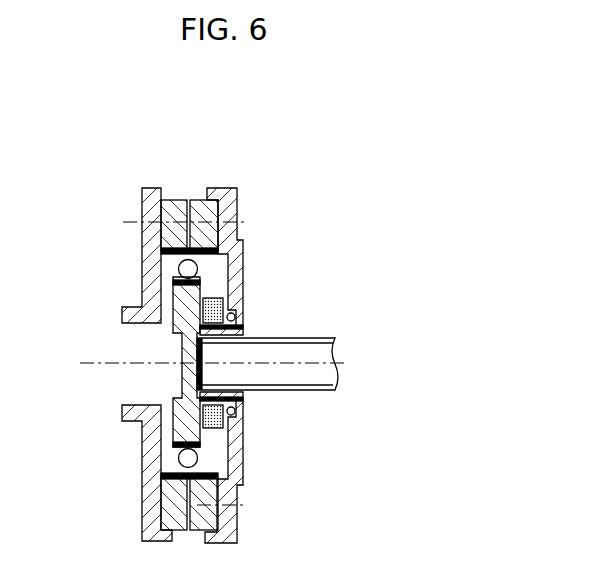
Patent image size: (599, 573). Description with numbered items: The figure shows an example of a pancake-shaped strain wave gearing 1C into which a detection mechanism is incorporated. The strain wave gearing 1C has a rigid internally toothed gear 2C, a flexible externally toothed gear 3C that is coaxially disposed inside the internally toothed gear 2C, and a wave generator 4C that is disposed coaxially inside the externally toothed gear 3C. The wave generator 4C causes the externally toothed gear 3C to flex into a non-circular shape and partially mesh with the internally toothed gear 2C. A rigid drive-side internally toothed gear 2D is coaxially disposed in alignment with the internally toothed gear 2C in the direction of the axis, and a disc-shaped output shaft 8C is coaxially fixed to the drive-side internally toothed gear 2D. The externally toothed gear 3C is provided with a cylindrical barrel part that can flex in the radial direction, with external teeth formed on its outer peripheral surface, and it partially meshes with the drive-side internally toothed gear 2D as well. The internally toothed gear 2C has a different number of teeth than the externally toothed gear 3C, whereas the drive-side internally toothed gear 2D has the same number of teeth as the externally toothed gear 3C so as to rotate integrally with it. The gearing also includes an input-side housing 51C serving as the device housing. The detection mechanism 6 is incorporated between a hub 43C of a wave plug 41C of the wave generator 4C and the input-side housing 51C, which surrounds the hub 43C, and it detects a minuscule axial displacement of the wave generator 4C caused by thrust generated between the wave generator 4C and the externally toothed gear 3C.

The pancake-shaped strain wave gearing 1C is at (282, 158).
The rigid internally toothed gear 2C is at (212, 204).
The rigid drive-side internally toothed gear 2D is at (168, 198).
The disc-shaped output shaft 8C is at (138, 196).
The wave generator 4C is at (157, 278).
The input-side housing 51C is at (240, 205).
The wave plug 41C is at (241, 485).
The flexible externally toothed gear 3C is at (214, 262).
The hub 43C is at (224, 394).
The detection mechanism 6 is at (220, 433).